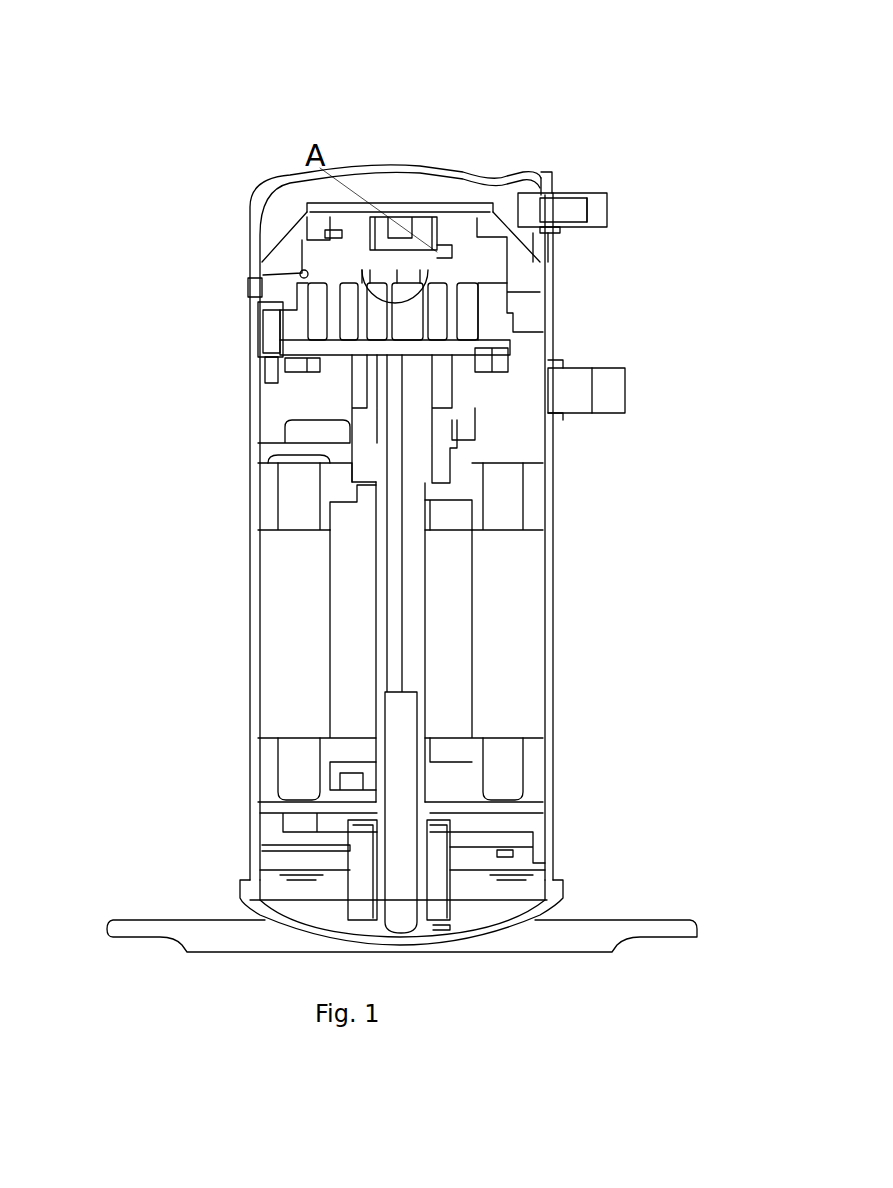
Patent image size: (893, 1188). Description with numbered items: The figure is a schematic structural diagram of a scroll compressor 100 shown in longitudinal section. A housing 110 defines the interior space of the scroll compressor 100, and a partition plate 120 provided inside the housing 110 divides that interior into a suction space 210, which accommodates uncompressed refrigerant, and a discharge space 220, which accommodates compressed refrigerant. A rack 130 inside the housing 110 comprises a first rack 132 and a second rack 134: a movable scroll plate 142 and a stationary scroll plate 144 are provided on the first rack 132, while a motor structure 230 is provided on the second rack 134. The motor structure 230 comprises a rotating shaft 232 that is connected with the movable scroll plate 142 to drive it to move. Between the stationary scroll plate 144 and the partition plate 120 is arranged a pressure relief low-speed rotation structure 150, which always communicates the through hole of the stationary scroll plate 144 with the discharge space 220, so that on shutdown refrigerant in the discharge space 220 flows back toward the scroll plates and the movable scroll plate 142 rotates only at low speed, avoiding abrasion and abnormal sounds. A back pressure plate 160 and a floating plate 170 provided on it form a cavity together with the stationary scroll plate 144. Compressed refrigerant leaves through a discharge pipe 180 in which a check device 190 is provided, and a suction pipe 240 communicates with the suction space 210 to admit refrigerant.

The scroll compressor 100 is at (432, 151).
The housing 110 is at (478, 170).
The partition plate 120 is at (345, 248).
The rack 130 is at (148, 276).
The first rack 132 is at (255, 295).
The second rack 134 is at (290, 860).
The movable scroll plate 142 is at (457, 352).
The stationary scroll plate 144 is at (510, 325).
The pressure relief low-speed rotation structure 150 is at (297, 248).
The back pressure plate 160 is at (480, 258).
The floating plate 170 is at (567, 228).
The discharge pipe 180 is at (593, 193).
The check device 190 is at (563, 188).
The suction space 210 is at (285, 272).
The discharge space 220 is at (362, 213).
The motor structure 230 is at (407, 597).
The rotating shaft 232 is at (415, 438).
The suction pipe 240 is at (590, 395).